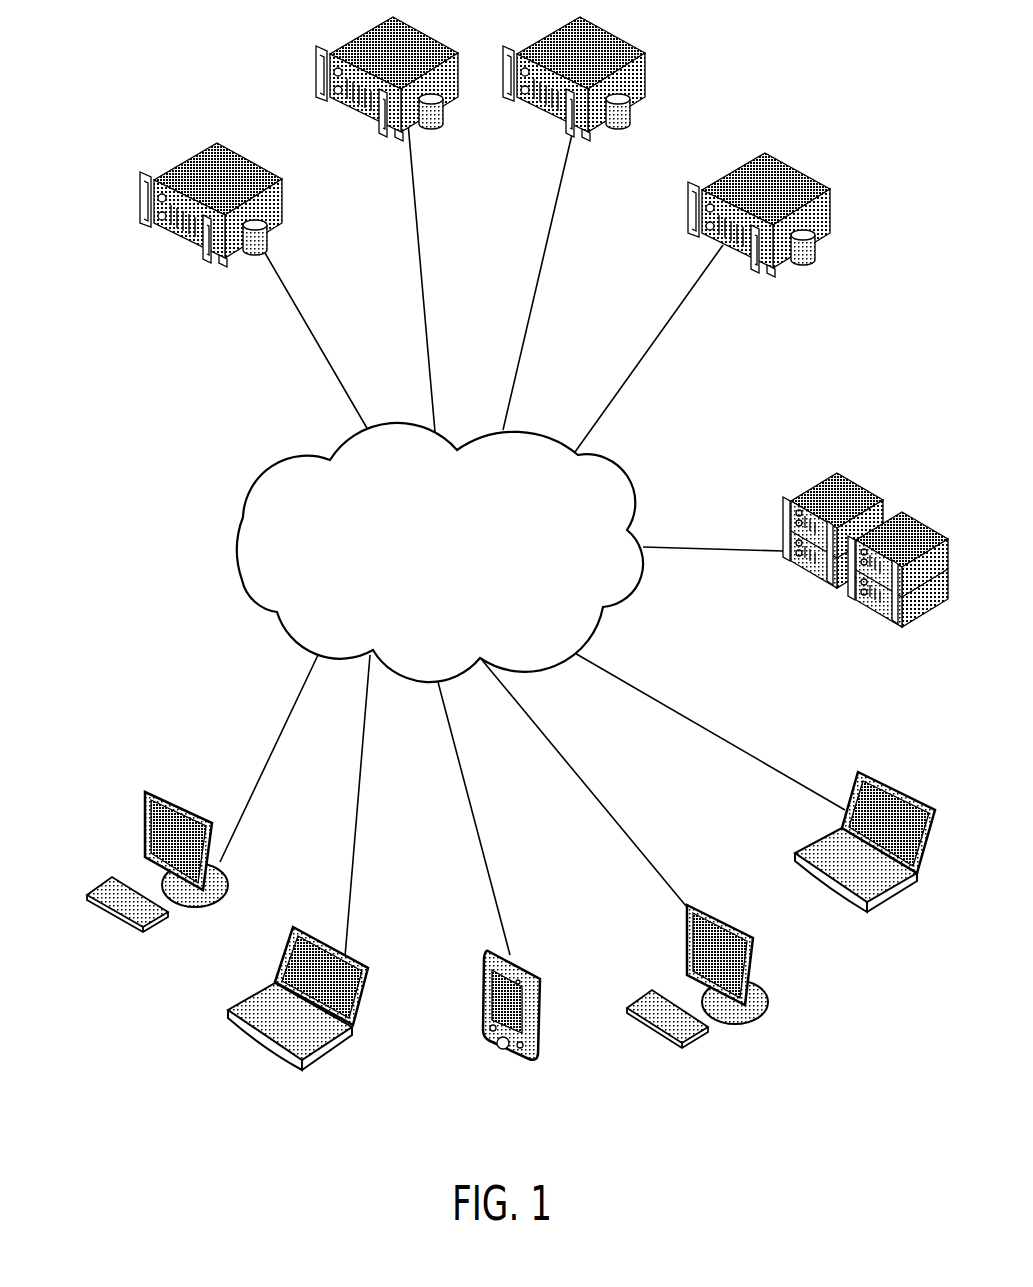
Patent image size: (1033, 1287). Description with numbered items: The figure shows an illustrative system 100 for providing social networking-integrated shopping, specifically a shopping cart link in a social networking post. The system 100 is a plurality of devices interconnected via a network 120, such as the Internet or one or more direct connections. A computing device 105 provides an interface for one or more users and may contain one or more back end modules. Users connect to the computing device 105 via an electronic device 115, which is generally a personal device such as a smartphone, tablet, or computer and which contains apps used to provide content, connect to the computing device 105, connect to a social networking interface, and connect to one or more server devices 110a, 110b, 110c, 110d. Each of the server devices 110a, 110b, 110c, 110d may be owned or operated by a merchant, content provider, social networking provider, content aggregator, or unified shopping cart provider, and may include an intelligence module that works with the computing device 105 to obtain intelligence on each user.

The system 100 is at (120, 315).
The computing device 105 is at (825, 480).
The server device 110a is at (170, 176).
The server device 110b is at (315, 62).
The server device 110c is at (643, 72).
The server device 110d is at (812, 207).
The electronic device 115 is at (153, 790).
The network 120 is at (265, 472).